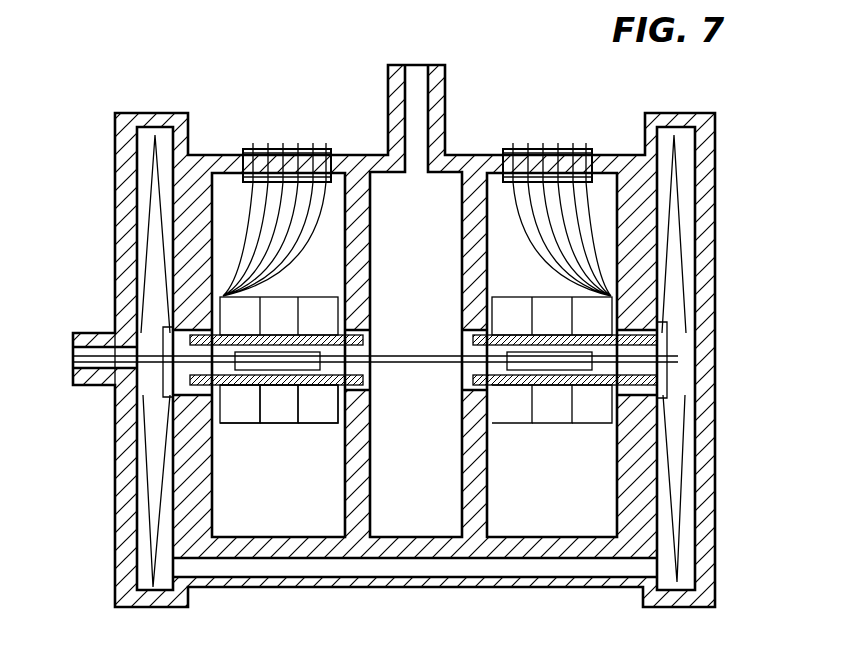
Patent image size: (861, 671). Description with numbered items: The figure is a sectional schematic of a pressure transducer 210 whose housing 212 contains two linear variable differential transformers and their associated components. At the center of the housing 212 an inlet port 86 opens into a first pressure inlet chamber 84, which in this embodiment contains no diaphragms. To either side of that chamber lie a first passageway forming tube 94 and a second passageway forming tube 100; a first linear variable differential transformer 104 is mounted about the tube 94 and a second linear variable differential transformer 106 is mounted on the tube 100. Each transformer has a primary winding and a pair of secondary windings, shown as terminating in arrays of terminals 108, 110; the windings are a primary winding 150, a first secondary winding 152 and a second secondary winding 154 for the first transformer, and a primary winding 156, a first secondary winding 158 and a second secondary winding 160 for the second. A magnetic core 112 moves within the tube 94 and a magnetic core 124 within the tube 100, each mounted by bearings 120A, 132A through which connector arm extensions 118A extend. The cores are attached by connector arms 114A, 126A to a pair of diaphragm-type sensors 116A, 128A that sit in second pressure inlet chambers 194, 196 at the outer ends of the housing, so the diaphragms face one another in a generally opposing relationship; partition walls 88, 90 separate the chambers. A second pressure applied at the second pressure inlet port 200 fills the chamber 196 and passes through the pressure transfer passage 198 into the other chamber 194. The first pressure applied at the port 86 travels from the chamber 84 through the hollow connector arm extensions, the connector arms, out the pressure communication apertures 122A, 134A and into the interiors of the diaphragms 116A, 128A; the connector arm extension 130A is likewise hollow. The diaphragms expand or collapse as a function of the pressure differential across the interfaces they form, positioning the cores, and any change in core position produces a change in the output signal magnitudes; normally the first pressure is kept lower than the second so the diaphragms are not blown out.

The first pressure inlet chamber 84 is at (446, 185).
The inlet port 86 is at (427, 68).
The inner partition wall 88 is at (470, 510).
The inner partition wall 90 is at (345, 510).
The first passageway forming tube 94 is at (468, 400).
The second passageway forming tube 100 is at (190, 330).
The first linear variable differential transformer 104 is at (503, 295).
The second linear variable differential transformer 106 is at (333, 296).
The array of terminals 108 is at (540, 149).
The array of terminals 110 is at (289, 143).
The magnetic core 112 is at (548, 360).
The connector arm 114A is at (680, 350).
The diaphragm-type sensor 116A is at (675, 158).
The connector arm extension 118A is at (358, 382).
The bearing 120A is at (468, 345).
The pressure communication aperture 122A is at (655, 320).
The magnetic core 124 is at (278, 360).
The connector arm 126A is at (140, 395).
The diaphragm-type sensor 128A is at (150, 158).
The lower plate 130A is at (357, 362).
The bearing 132A is at (360, 350).
The pressure communication aperture 134A is at (190, 350).
The primary winding 150 is at (550, 413).
The first secondary winding 152 is at (588, 413).
The second secondary winding 154 is at (512, 413).
The primary winding 156 is at (278, 415).
The first secondary winding 158 is at (313, 413).
The second secondary winding 160 is at (242, 415).
The second pressure inlet chamber 194 is at (685, 555).
The second pressure inlet chamber 196 is at (140, 556).
The pressure transfer passage 198 is at (590, 565).
The second pressure inlet port 200 is at (73, 378).
The pressure transducer 210 is at (715, 200).
The housing 212 is at (703, 225).